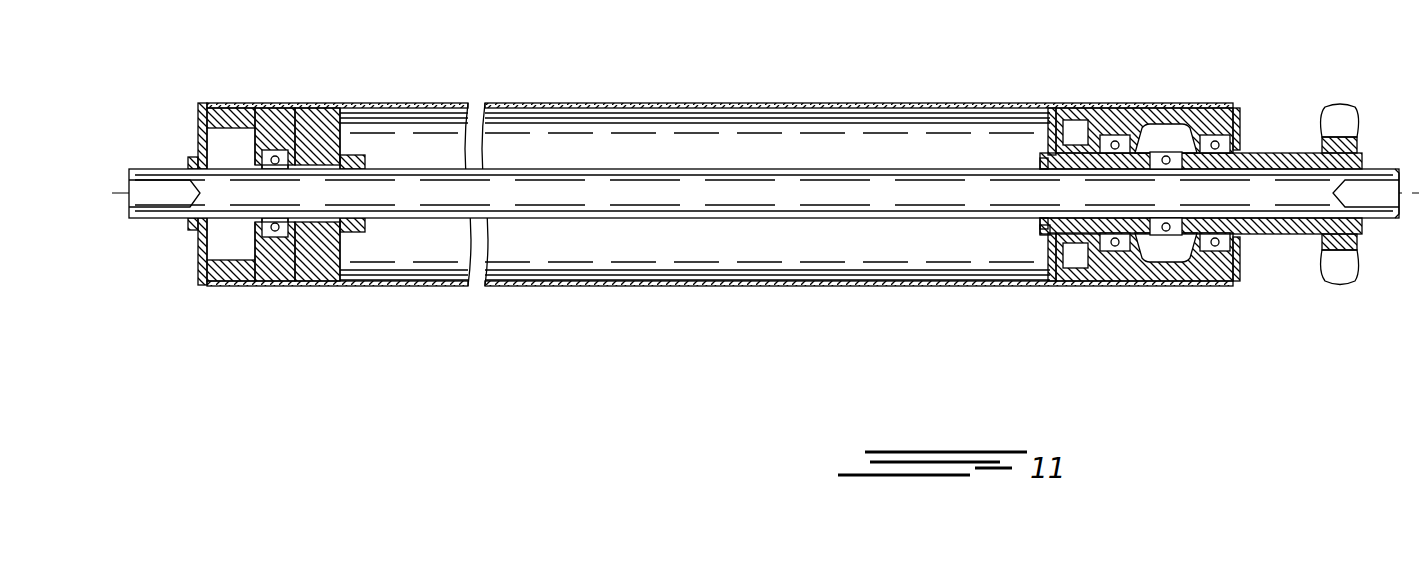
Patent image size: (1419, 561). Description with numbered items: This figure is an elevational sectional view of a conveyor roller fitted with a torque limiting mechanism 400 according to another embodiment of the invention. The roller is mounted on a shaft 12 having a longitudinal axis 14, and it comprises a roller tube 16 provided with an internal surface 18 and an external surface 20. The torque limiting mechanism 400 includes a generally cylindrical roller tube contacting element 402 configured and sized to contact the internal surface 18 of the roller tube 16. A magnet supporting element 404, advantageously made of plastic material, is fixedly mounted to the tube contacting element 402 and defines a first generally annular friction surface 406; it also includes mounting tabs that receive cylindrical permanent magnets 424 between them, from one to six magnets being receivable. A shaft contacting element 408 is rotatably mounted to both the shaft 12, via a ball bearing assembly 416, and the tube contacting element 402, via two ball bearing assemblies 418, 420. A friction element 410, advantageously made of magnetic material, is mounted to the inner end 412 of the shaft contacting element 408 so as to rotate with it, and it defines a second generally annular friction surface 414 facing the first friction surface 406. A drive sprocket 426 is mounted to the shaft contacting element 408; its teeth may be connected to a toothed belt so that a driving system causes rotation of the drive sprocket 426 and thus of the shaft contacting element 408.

The shaft 12 is at (1380, 215).
The longitudinal axis 14 is at (1418, 190).
The roller tube 16 is at (740, 103).
The internal surface 18 is at (836, 103).
The external surface 20 is at (911, 103).
The torque limiting mechanism 400 is at (1151, 183).
The roller tube contacting element 402 is at (1154, 103).
The magnet supporting element 404 is at (1066, 103).
The first generally annular friction surface 406 is at (1017, 103).
The shaft contacting element 408 is at (1283, 237).
The friction element 410 is at (1045, 250).
The inner end 412 is at (1030, 229).
The second generally annular friction surface 414 is at (1048, 148).
The ball bearing assembly 416 is at (1165, 245).
The ball bearing assembly 418 is at (1112, 103).
The ball bearing assembly 420 is at (1216, 103).
The cylindrical permanent magnets 424 is at (1070, 262).
The drive sprocket 426 is at (1340, 108).